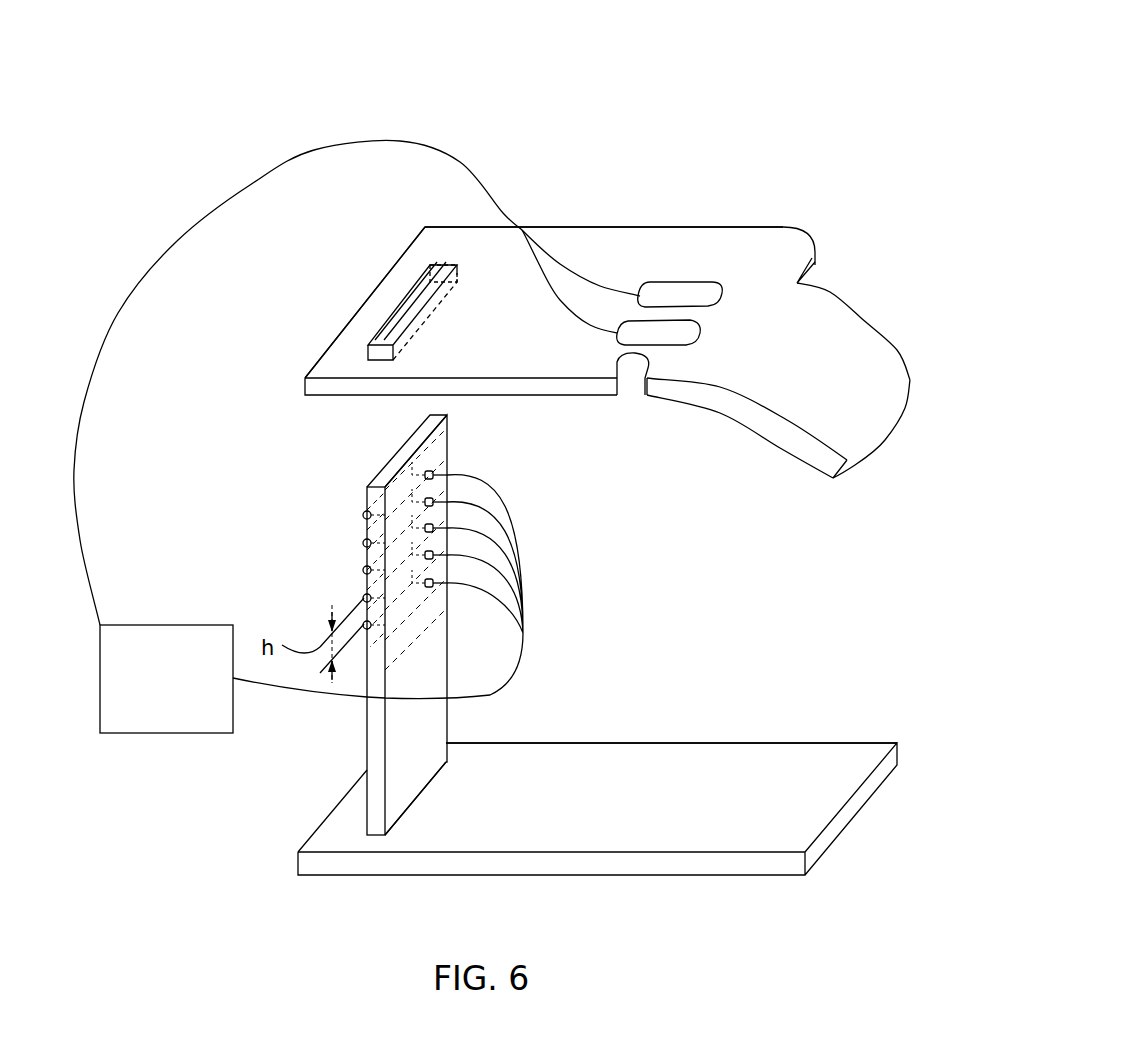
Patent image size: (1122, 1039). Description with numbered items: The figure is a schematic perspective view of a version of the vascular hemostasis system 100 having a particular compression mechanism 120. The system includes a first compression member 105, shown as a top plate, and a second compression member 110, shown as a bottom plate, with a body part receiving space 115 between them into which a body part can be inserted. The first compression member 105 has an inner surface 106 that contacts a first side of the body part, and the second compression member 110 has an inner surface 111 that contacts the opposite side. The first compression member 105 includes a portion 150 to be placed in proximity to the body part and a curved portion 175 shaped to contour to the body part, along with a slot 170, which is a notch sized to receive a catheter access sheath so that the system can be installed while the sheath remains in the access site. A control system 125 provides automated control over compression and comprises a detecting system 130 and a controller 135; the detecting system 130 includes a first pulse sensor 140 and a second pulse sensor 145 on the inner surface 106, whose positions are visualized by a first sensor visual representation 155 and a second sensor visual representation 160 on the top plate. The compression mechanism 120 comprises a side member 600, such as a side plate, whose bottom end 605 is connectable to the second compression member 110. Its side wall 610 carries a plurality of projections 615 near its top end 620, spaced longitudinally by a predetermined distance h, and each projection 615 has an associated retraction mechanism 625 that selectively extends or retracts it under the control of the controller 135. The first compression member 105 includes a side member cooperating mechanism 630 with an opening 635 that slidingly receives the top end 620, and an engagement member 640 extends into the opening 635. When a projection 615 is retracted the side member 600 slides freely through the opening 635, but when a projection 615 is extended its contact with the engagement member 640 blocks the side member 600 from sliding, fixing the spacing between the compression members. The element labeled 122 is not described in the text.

The vascular hemostasis system 100 is at (748, 135).
The first compression member 105 is at (600, 240).
The inner surface 106 is at (566, 402).
The second compression member 110 is at (793, 840).
The inner surface 111 is at (667, 766).
The body part receiving space 115 is at (880, 585).
The compression mechanism 120 is at (205, 462).
The contact array 122 is at (224, 548).
The control system 125 is at (110, 773).
The detecting system 130 is at (690, 250).
The controller 135 is at (170, 735).
The first pulse sensor 140 is at (668, 295).
The second pulse sensor 145 is at (618, 340).
The portion 150 is at (664, 405).
The first sensor visual representation 155 is at (722, 296).
The second sensor visual representation 160 is at (700, 336).
The slot 170 is at (632, 392).
The curved portion 175 is at (880, 305).
The side member 600 is at (432, 733).
The bottom end 605 is at (356, 812).
The side wall 610 is at (363, 708).
The projections 615 is at (363, 625).
The top end 620 is at (338, 478).
The retraction mechanism 625 is at (433, 583).
The side member cooperating mechanism 630 is at (385, 243).
The opening 635 is at (440, 265).
The engagement member 640 is at (378, 342).